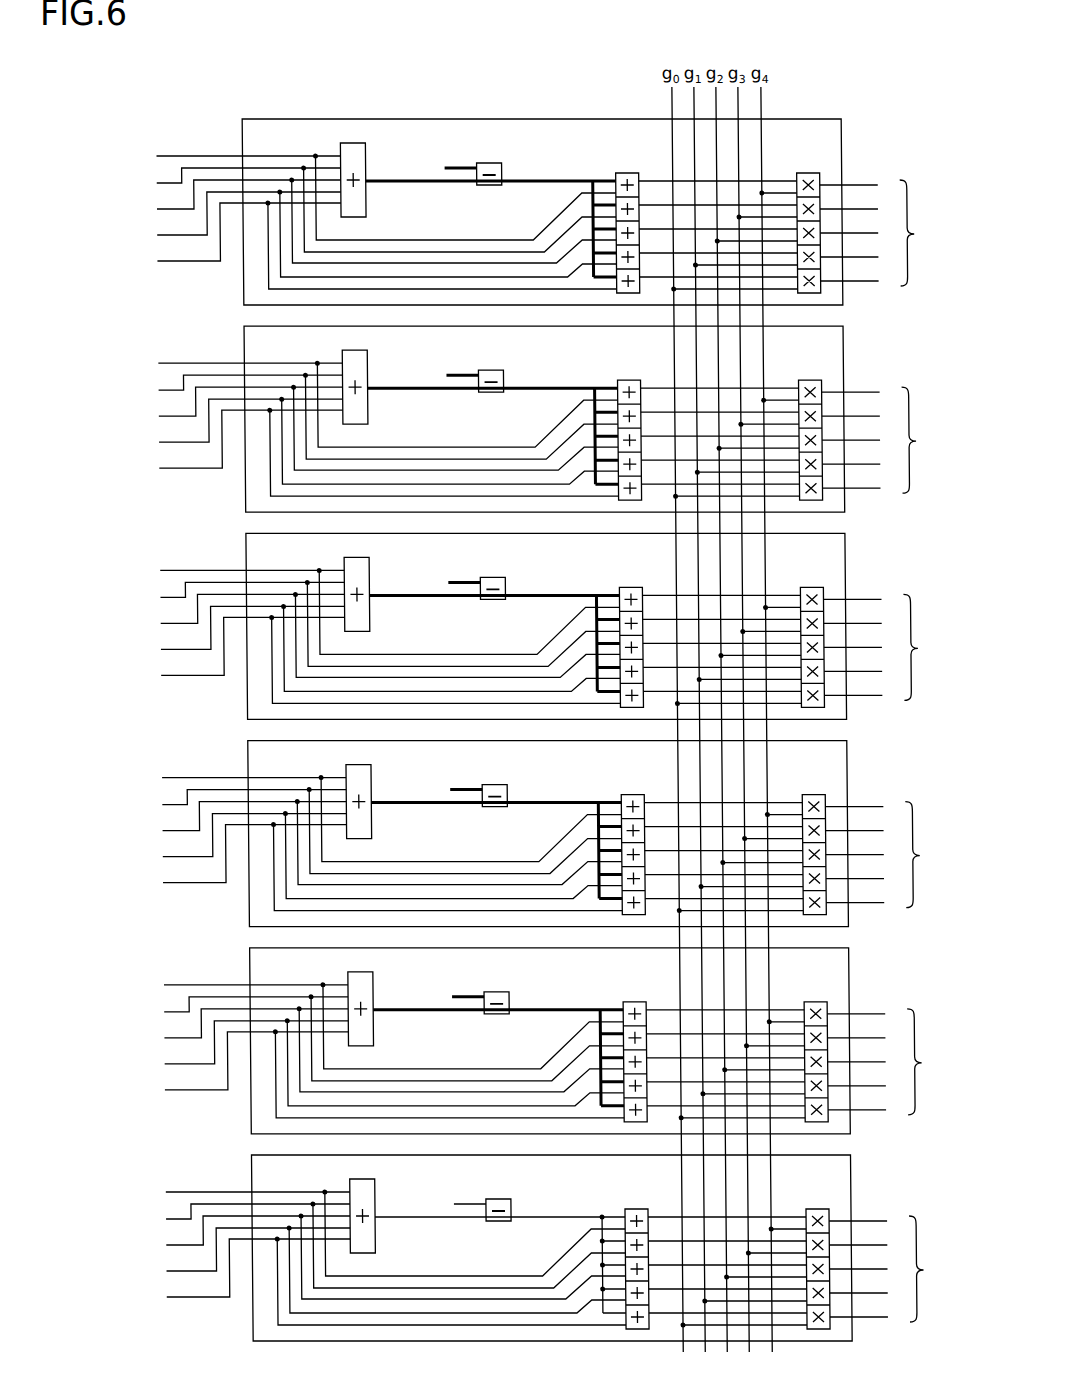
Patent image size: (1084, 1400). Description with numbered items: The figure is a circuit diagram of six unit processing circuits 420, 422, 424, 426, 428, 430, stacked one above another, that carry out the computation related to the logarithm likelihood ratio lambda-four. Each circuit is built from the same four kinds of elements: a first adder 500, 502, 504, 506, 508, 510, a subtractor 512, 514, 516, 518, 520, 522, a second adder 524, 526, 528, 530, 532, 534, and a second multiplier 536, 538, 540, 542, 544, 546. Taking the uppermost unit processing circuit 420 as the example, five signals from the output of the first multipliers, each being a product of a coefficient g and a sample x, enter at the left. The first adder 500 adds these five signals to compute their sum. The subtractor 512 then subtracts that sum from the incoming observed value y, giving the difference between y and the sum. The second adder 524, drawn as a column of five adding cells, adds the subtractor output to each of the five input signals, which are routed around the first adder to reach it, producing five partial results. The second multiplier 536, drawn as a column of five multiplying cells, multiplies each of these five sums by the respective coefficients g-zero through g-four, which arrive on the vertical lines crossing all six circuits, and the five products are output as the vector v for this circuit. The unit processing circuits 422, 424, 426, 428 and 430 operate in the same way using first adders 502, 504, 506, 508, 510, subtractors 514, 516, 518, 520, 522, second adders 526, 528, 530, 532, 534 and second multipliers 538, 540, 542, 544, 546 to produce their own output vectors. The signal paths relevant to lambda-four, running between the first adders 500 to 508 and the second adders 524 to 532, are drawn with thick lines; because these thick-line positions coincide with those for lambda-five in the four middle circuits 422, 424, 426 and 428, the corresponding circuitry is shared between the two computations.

The unit processing circuit 420 is at (842, 140).
The unit processing circuit 422 is at (529, 419).
The unit processing circuit 424 is at (532, 626).
The unit processing circuit 426 is at (533, 834).
The unit processing circuit 428 is at (535, 1041).
The unit processing circuit 430 is at (536, 1248).
The first adder 500 is at (367, 198).
The first adder 502 is at (384, 392).
The first adder 504 is at (386, 599).
The first adder 506 is at (388, 807).
The first adder 508 is at (390, 1014).
The first adder 510 is at (392, 1221).
The subtractor 512 is at (494, 163).
The subtractor 514 is at (511, 364).
The subtractor 516 is at (513, 571).
The subtractor 518 is at (515, 779).
The subtractor 520 is at (517, 986).
The subtractor 522 is at (519, 1193).
The second adder 524 is at (628, 173).
The second adder 526 is at (637, 416).
The second adder 528 is at (639, 623).
The second adder 530 is at (641, 831).
The second adder 532 is at (643, 1038).
The second adder 534 is at (645, 1245).
The second multiplier 536 is at (808, 173).
The second multiplier 538 is at (819, 416).
The second multiplier 540 is at (821, 623).
The second multiplier 542 is at (823, 831).
The second multiplier 544 is at (825, 1038).
The second multiplier 546 is at (827, 1245).